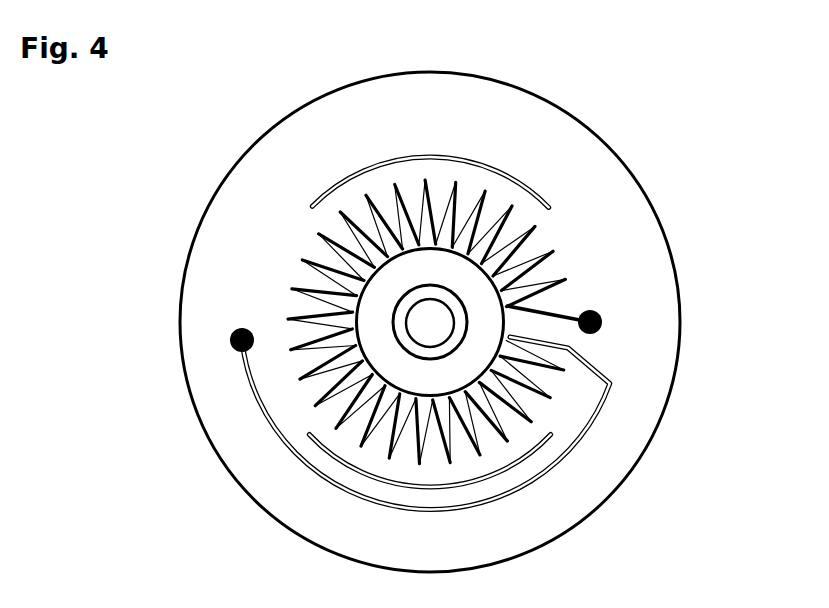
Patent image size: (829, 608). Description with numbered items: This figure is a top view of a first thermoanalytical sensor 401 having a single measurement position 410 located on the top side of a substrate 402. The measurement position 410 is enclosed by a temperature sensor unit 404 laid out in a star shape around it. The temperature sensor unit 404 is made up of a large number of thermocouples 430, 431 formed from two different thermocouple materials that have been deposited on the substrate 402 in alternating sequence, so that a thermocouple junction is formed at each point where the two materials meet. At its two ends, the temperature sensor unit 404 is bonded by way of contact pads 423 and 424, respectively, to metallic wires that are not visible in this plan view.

The sensor 401 is at (636, 114).
The substrate 402 is at (600, 464).
The temperature sensor unit 404 is at (532, 240).
The measurement position 410 is at (428, 316).
The contact pad 423 is at (590, 322).
The contact pad 424 is at (242, 340).
The thermocouple 430 is at (372, 218).
The thermocouple 431 is at (391, 240).